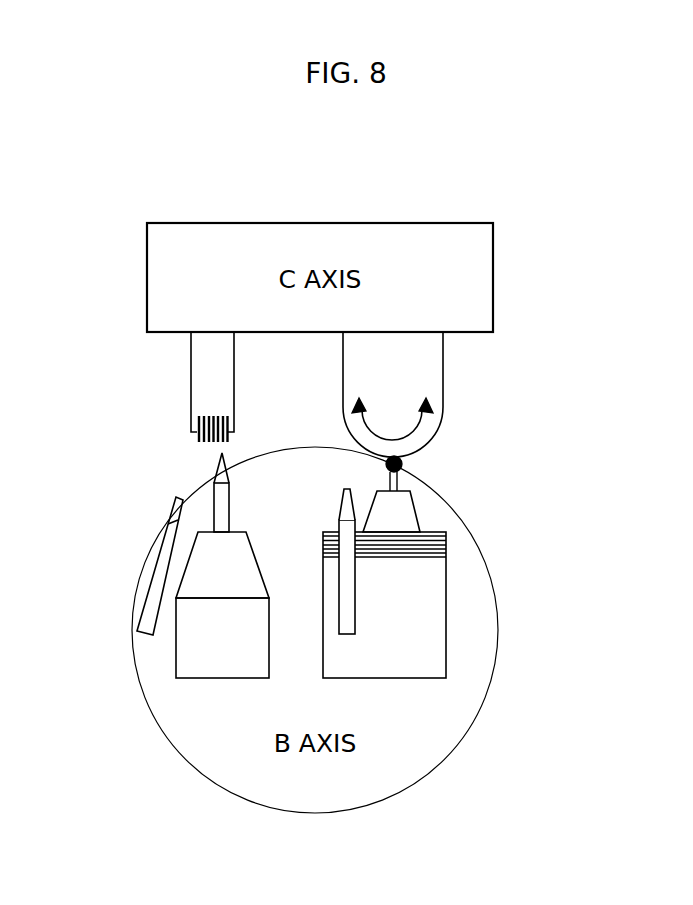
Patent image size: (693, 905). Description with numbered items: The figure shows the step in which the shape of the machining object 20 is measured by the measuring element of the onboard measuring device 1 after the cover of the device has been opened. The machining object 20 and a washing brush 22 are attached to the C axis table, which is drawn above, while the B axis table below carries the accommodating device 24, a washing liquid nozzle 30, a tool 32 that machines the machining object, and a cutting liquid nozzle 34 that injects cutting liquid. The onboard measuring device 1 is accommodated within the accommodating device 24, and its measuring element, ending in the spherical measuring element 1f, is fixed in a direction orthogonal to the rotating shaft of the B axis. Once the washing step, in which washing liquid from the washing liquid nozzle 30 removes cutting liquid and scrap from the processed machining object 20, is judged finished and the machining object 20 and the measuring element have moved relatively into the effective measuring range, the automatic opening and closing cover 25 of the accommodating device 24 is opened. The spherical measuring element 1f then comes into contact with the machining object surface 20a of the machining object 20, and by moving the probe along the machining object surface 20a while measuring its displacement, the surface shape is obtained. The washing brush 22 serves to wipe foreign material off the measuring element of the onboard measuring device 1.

The onboard measuring device 1 is at (416, 502).
The spherical measuring element 1f is at (403, 463).
The machining object 20 is at (444, 360).
The machining object surface 20a is at (423, 422).
The washing brush 22 is at (190, 383).
The accommodating device 24 is at (446, 630).
The automatic opening and closing cover 25 is at (446, 545).
The washing liquid nozzle 30 is at (340, 504).
The tool 32 is at (217, 468).
The cutting liquid nozzle 34 is at (162, 537).